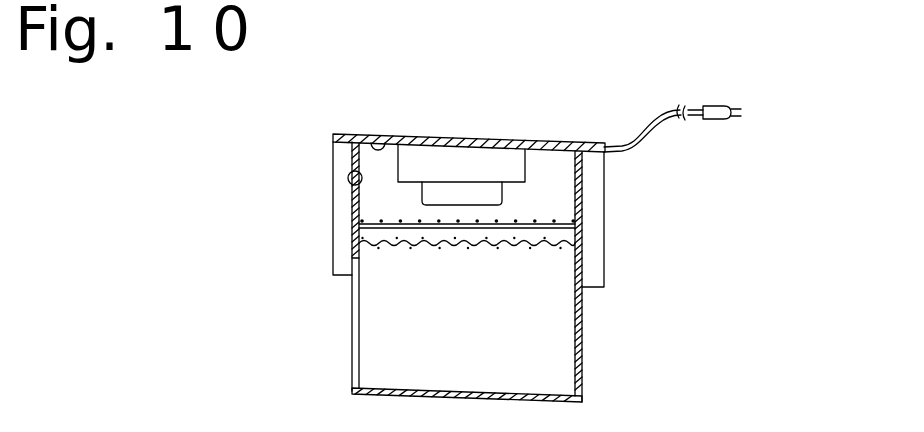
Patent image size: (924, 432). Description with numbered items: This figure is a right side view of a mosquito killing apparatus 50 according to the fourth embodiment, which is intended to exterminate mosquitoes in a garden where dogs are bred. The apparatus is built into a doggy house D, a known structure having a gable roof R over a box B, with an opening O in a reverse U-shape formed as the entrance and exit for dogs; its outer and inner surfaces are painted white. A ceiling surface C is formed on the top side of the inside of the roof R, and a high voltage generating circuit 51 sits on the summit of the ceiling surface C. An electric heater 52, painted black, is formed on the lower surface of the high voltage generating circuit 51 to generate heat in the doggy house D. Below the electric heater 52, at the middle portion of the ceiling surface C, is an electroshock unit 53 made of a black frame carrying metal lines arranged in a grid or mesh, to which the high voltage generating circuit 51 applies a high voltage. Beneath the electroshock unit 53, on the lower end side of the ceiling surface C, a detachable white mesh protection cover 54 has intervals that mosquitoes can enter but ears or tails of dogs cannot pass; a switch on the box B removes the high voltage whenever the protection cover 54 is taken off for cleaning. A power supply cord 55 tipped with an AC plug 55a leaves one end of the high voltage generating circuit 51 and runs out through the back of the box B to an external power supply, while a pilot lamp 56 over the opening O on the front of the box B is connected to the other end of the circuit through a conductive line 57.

The mosquito killing apparatus 50 is at (459, 135).
The high voltage generating circuit 51 is at (478, 157).
The electric heater 52 is at (488, 195).
The electroshock unit 53 is at (548, 216).
The protection cover 54 is at (510, 247).
The power supply cord 55 is at (650, 125).
The AC plug 55a is at (724, 108).
The pilot lamp 56 is at (348, 177).
The conductive line 57 is at (362, 178).
The ceiling surface C is at (373, 134).
The gable roof R is at (333, 230).
The opening O is at (352, 306).
The doggy house D is at (345, 343).
The box B is at (582, 357).